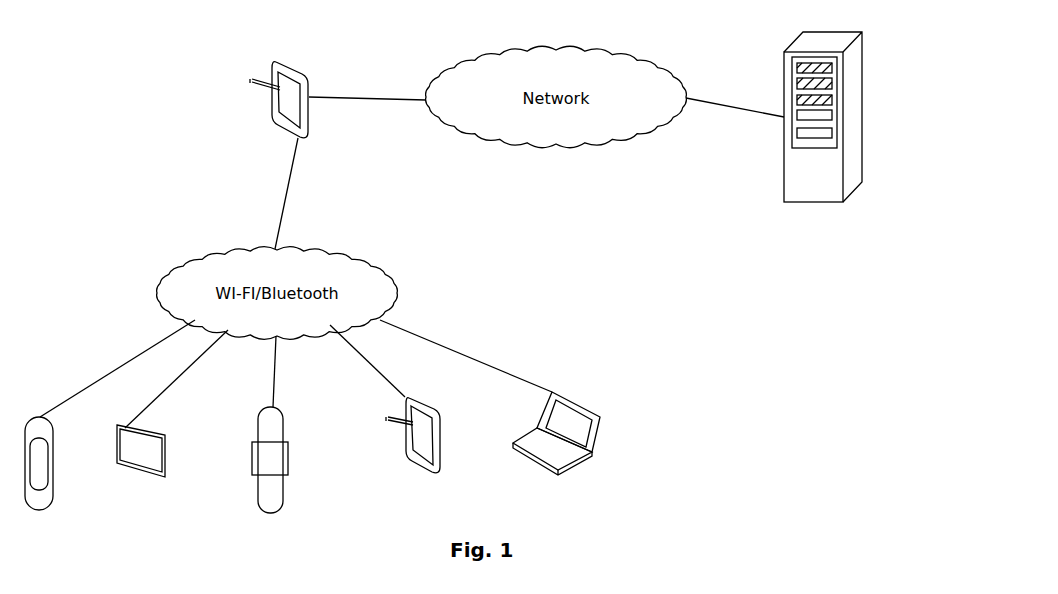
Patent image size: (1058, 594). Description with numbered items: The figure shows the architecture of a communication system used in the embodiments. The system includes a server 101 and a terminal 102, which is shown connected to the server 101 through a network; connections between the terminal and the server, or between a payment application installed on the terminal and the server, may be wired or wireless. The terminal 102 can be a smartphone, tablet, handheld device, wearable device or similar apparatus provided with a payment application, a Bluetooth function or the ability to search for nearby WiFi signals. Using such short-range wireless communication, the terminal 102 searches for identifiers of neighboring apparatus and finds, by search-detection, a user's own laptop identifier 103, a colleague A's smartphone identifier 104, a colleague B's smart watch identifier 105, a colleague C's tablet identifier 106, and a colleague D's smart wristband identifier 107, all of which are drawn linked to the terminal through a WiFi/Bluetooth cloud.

The server 101 is at (862, 62).
The terminal 102 is at (296, 68).
The user's own laptop identifier 103 is at (600, 415).
The colleague A's smartphone identifier 104 is at (442, 420).
The colleague B's smart watch identifier 105 is at (283, 430).
The colleague C's tablet identifier 106 is at (165, 437).
The colleague D's smart wristband identifier 107 is at (52, 447).